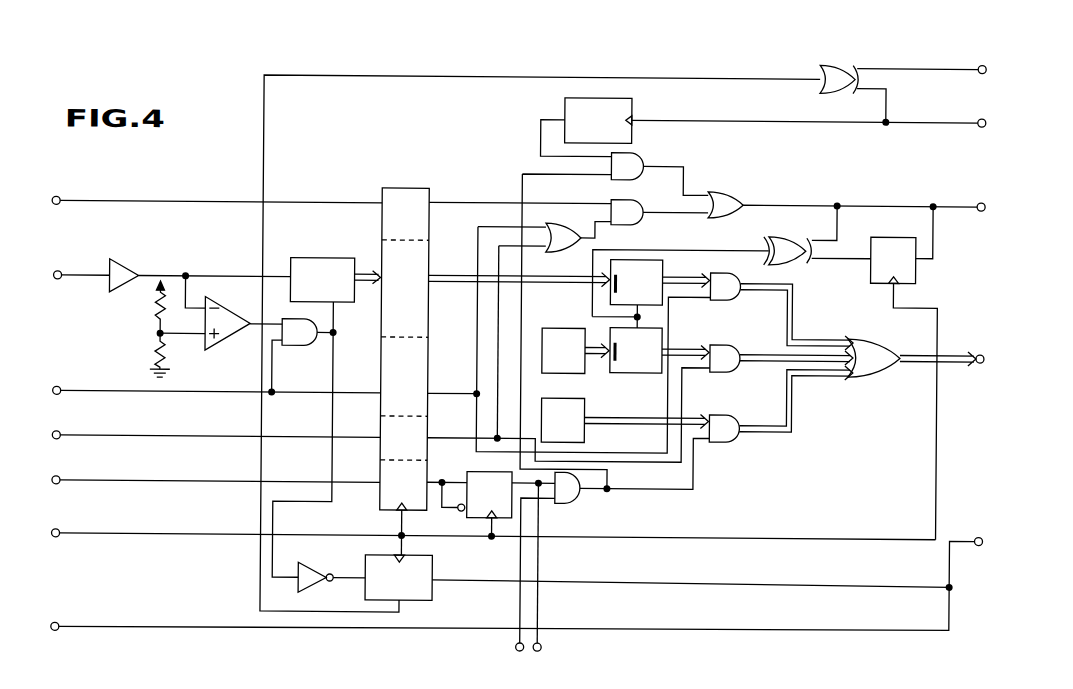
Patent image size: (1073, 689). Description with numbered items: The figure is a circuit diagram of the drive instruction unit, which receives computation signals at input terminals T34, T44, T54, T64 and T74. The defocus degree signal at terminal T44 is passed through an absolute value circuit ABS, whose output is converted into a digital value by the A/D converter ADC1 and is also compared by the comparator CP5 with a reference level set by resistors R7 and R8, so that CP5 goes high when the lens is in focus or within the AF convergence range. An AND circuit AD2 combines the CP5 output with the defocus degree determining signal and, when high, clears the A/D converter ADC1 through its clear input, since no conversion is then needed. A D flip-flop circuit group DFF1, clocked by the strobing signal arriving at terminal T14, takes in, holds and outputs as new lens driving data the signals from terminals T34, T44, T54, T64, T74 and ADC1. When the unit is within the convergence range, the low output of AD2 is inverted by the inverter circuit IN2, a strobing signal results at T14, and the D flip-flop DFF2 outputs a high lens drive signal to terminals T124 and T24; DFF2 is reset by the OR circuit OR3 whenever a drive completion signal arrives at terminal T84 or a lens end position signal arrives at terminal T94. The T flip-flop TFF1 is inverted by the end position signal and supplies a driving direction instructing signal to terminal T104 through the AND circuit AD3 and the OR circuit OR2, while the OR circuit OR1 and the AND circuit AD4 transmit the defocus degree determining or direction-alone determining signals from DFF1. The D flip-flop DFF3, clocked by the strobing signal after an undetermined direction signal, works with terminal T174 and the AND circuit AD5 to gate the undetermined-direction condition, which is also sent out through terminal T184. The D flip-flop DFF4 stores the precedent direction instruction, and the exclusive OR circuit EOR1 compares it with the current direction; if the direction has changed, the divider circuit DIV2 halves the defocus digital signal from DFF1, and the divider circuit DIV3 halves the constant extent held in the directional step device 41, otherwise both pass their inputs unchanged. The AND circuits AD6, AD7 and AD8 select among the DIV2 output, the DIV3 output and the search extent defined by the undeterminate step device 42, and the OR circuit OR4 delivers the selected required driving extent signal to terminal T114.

The absolute value circuit ABS is at (111, 261).
The A/D converter ADC1 is at (316, 259).
The resistor R7 is at (155, 310).
The resistor R8 is at (155, 351).
The comparator CP5 is at (231, 341).
The AND circuit AD2 is at (298, 347).
The D flip-flop circuit group DFF1 is at (395, 186).
The T flip-flop TFF1 is at (563, 104).
The AND circuit AD3 is at (645, 138).
The AND circuit AD4 is at (645, 186).
The OR circuit OR1 is at (556, 224).
The OR circuit OR2 is at (724, 191).
The OR circuit OR3 is at (824, 64).
The exclusive OR circuit EOR1 is at (768, 239).
The D flip-flop DFF4 is at (916, 278).
The divider circuit DIV2 is at (640, 258).
The divider circuit DIV3 is at (634, 373).
The directional step device 41 is at (560, 327).
The undeterminate step device 42 is at (552, 398).
The AND circuit AD6 is at (731, 298).
The AND circuit AD7 is at (731, 370).
The AND circuit AD8 is at (729, 440).
The OR circuit OR4 is at (861, 334).
The AND circuit AD5 is at (580, 500).
The D flip-flop DFF3 is at (471, 522).
The D flip-flop DFF2 is at (435, 598).
The inverter circuit IN2 is at (309, 573).
The terminal T34 is at (42, 204).
The terminal T44 is at (42, 279).
The terminal T54 is at (42, 394).
The terminal T64 is at (41, 439).
The terminal T74 is at (41, 484).
The terminal T14 is at (40, 537).
The terminal T24 is at (40, 630).
The terminal T84 is at (997, 74).
The terminal T94 is at (997, 127).
The terminal T104 is at (1000, 211).
The terminal T114 is at (999, 363).
The terminal T124 is at (997, 546).
The terminal T174 is at (503, 651).
The terminal T184 is at (554, 651).